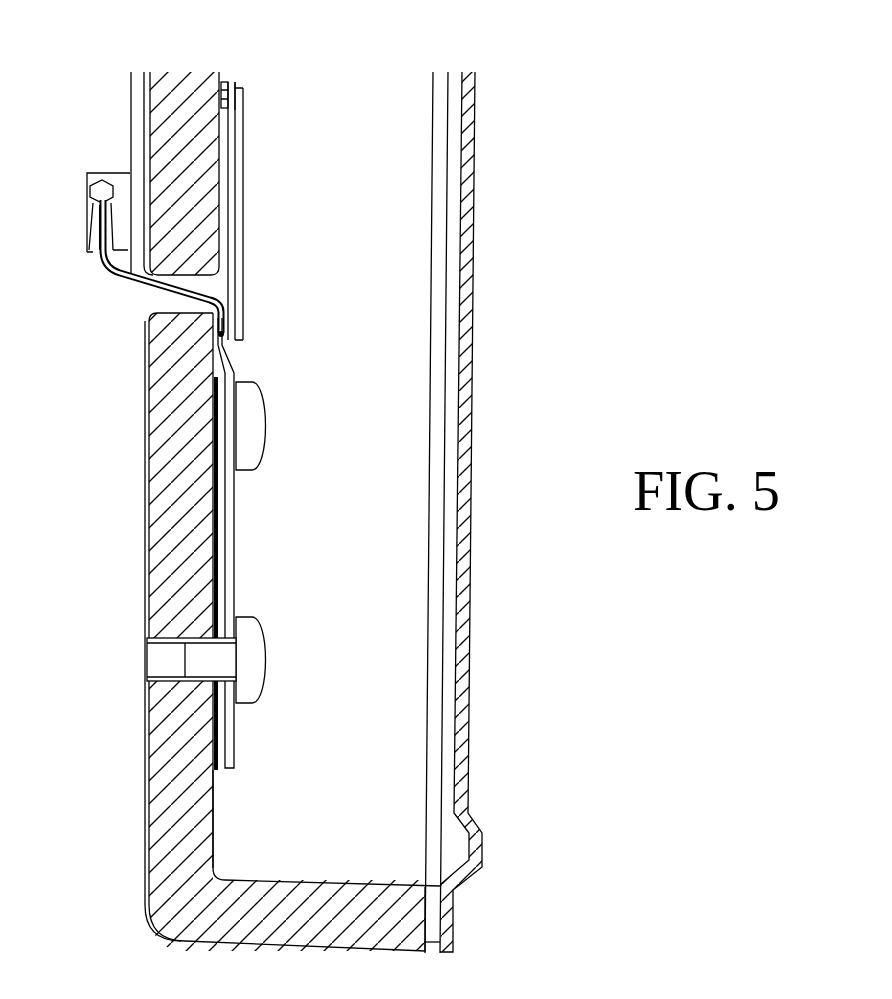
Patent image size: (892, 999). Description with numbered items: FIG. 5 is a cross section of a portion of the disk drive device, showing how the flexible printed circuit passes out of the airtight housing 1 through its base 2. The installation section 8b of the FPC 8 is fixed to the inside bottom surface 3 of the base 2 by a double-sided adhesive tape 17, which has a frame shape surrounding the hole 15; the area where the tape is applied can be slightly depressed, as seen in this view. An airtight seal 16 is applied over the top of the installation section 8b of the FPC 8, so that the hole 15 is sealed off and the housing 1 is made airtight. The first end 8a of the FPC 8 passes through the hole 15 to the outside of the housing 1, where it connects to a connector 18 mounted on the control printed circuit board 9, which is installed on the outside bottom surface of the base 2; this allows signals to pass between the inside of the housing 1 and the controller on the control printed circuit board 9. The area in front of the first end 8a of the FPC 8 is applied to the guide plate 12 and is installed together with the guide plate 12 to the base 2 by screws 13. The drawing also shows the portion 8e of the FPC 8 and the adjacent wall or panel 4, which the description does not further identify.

The housing 1 is at (148, 922).
The base 2 is at (152, 537).
The inside bottom surface 3 is at (213, 807).
The outer panel 4 is at (473, 227).
The FPC 8 is at (232, 363).
The first end 8a is at (100, 253).
The installation section 8b is at (232, 82).
The bent portion of wiring board 8e is at (222, 333).
The control printed circuit board 9 is at (130, 128).
The guide plate 12 is at (222, 600).
The screws 13 is at (267, 427).
The hole 15 is at (158, 303).
The airtight seal 16 is at (243, 235).
The double-sided adhesive tape 17 is at (221, 82).
The connector 18 is at (92, 173).